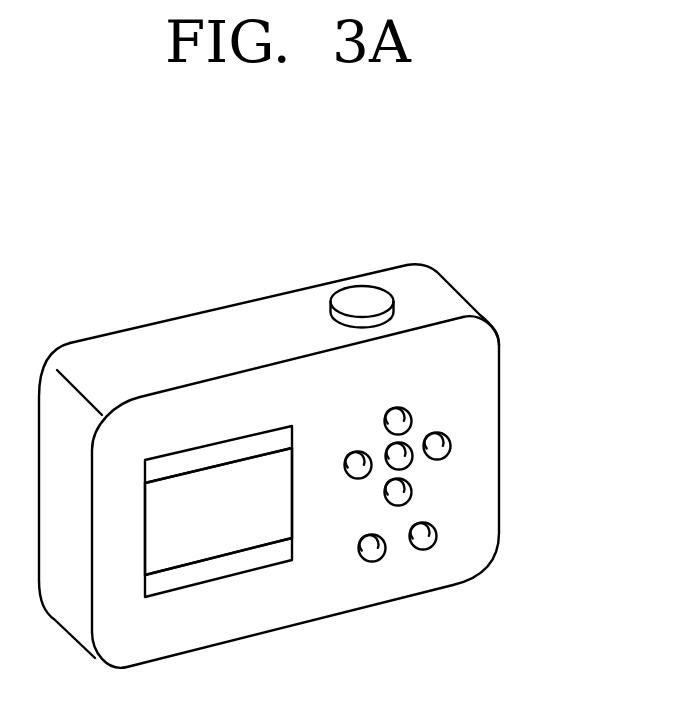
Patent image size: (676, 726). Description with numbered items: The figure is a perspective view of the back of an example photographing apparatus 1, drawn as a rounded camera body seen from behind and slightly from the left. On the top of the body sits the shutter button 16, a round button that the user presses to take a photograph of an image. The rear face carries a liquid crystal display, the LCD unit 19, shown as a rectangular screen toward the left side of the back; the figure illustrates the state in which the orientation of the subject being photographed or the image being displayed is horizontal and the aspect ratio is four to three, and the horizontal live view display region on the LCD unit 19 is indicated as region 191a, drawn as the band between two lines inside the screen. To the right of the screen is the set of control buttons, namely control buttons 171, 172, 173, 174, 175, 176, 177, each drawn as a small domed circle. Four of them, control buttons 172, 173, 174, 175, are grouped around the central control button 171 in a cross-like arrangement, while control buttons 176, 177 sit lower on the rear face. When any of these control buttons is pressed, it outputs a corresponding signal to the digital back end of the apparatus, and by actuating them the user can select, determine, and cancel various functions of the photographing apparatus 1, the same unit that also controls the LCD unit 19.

The photographing apparatus 1 is at (513, 268).
The shutter button 16 is at (360, 297).
The liquid crystal display (LCD) unit 19 is at (258, 570).
The horizontal live view display region 191a is at (200, 545).
The control button 171 is at (407, 461).
The control button 172 is at (404, 421).
The control button 173 is at (444, 447).
The control button 174 is at (408, 497).
The control button 175 is at (360, 473).
The control button 176 is at (428, 546).
The control button 177 is at (375, 555).